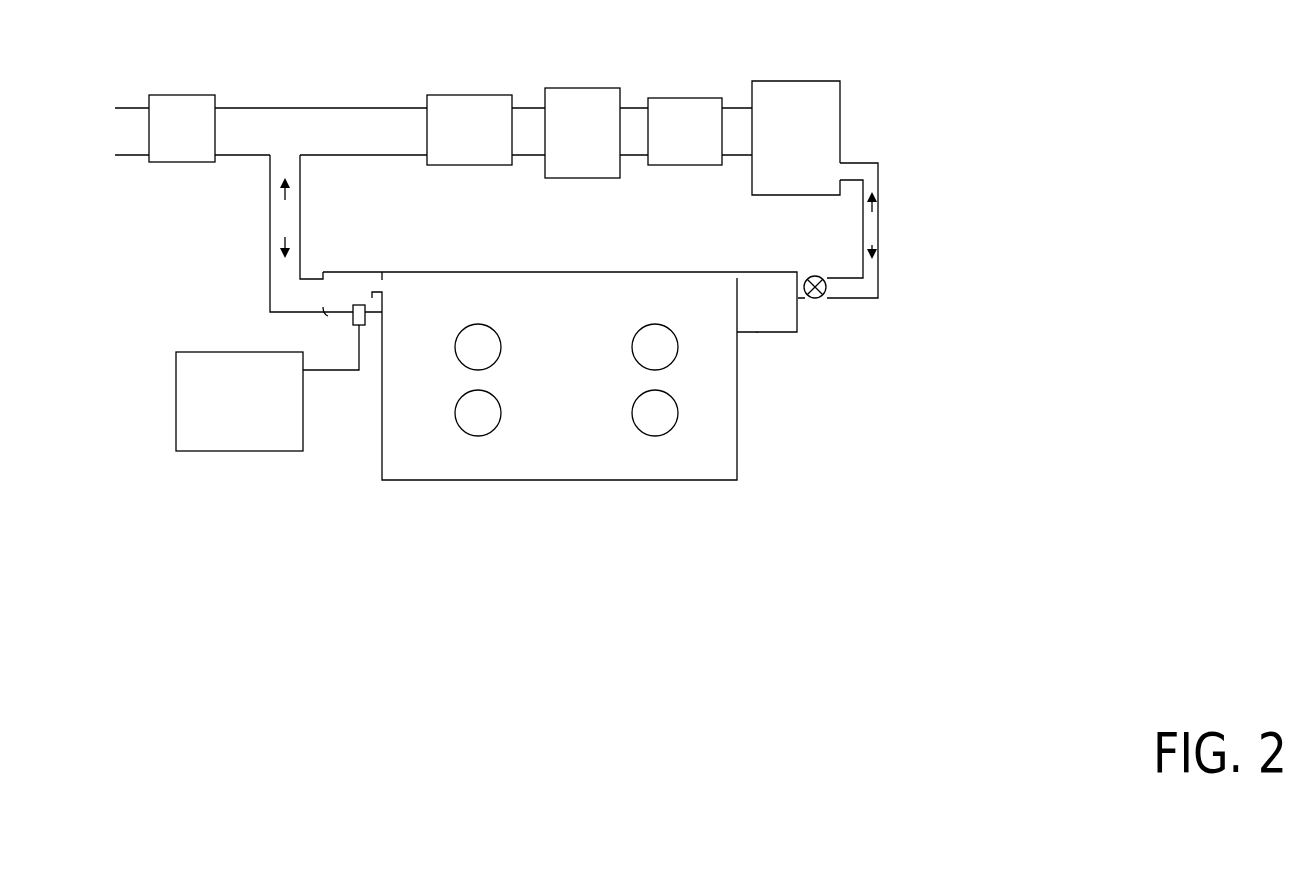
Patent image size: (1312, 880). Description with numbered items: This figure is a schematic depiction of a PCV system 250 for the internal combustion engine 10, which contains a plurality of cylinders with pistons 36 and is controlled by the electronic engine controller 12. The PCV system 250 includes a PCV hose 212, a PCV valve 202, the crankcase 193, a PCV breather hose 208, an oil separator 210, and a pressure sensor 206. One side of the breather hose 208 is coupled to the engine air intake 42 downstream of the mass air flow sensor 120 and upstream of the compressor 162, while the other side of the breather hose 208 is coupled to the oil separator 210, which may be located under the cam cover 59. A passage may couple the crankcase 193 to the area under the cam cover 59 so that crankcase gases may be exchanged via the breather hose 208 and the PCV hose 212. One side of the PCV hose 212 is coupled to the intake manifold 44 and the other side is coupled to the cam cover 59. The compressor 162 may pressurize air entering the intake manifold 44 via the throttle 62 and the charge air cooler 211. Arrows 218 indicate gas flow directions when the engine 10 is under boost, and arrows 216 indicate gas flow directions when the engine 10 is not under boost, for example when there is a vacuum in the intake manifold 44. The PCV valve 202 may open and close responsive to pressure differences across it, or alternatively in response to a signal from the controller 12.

The internal combustion engine 10 is at (560, 346).
The electronic engine controller 12 is at (227, 413).
The piston 36 is at (467, 358).
The engine air intake 42 is at (332, 116).
The intake manifold 44 is at (783, 151).
The cam cover 59 is at (324, 314).
The throttle 62 is at (672, 144).
The mass air flow sensor 120 is at (163, 140).
The compressor 162 is at (451, 141).
The crankcase 193 is at (540, 391).
The PCV valve 202 is at (817, 299).
The pressure sensor 206 is at (358, 326).
The PCV breather hose 208 is at (270, 281).
The oil separator 210 is at (372, 266).
The charge air cooler 211 is at (563, 145).
The PCV hose 212 is at (880, 263).
The arrows 216 is at (285, 238).
The arrows 218 is at (283, 187).
The PCV system 250 is at (222, 264).